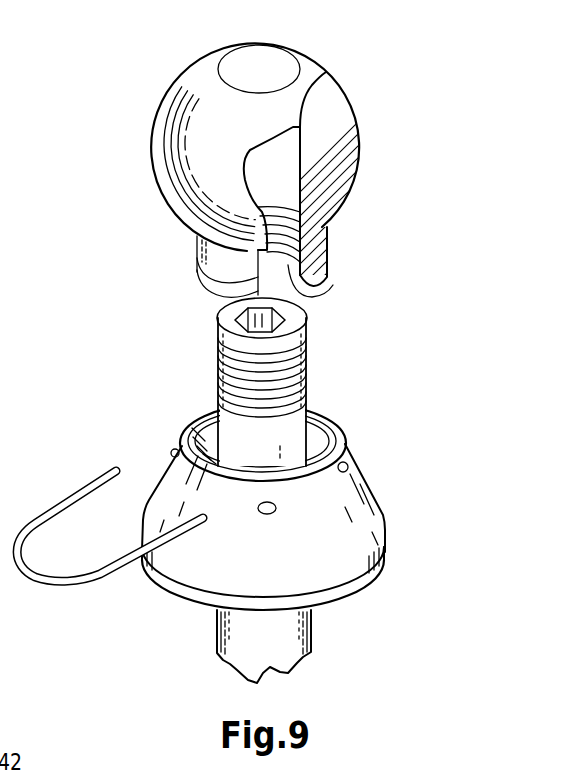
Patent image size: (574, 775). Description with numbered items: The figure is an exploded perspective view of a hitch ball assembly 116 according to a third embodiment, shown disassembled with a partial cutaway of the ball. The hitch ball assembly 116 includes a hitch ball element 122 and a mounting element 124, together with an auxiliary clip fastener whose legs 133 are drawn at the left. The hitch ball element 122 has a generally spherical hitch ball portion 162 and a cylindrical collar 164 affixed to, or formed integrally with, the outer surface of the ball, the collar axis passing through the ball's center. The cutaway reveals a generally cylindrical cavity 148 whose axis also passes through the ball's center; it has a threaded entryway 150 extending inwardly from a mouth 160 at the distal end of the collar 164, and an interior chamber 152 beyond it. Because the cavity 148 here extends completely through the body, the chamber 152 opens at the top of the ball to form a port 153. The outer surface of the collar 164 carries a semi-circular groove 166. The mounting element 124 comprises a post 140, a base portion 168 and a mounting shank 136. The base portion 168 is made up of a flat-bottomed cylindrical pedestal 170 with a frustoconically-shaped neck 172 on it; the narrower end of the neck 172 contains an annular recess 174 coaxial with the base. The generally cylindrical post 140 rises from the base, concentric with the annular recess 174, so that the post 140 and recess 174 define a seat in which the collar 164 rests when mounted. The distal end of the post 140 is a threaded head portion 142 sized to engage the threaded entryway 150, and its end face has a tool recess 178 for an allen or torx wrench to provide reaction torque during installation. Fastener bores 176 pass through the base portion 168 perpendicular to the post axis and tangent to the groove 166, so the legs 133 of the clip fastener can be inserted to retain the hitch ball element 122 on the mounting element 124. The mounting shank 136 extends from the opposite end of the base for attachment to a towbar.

The hitch ball assembly 116 is at (152, 281).
The hitch ball element 122 is at (130, 150).
The port 153 is at (238, 60).
The hitch ball portion 162 is at (178, 172).
The interior chamber 152 is at (298, 165).
The cavity 148 is at (298, 193).
The collar 164 is at (200, 244).
The semi-circular groove 166 is at (218, 283).
The threaded entryway 150 is at (314, 300).
The mounting element 124 is at (174, 365).
The tool recess 178 is at (228, 322).
The mouth 160 is at (309, 312).
The threaded head portion 142 is at (307, 372).
The post 140 is at (290, 425).
The annular recess 174 is at (199, 424).
The fastener bores 176 is at (171, 451).
The base portion 168 is at (340, 500).
The pedestal 170 is at (378, 548).
The neck 172 is at (222, 578).
The mounting shank 136 is at (298, 632).
The legs 133 is at (95, 477).